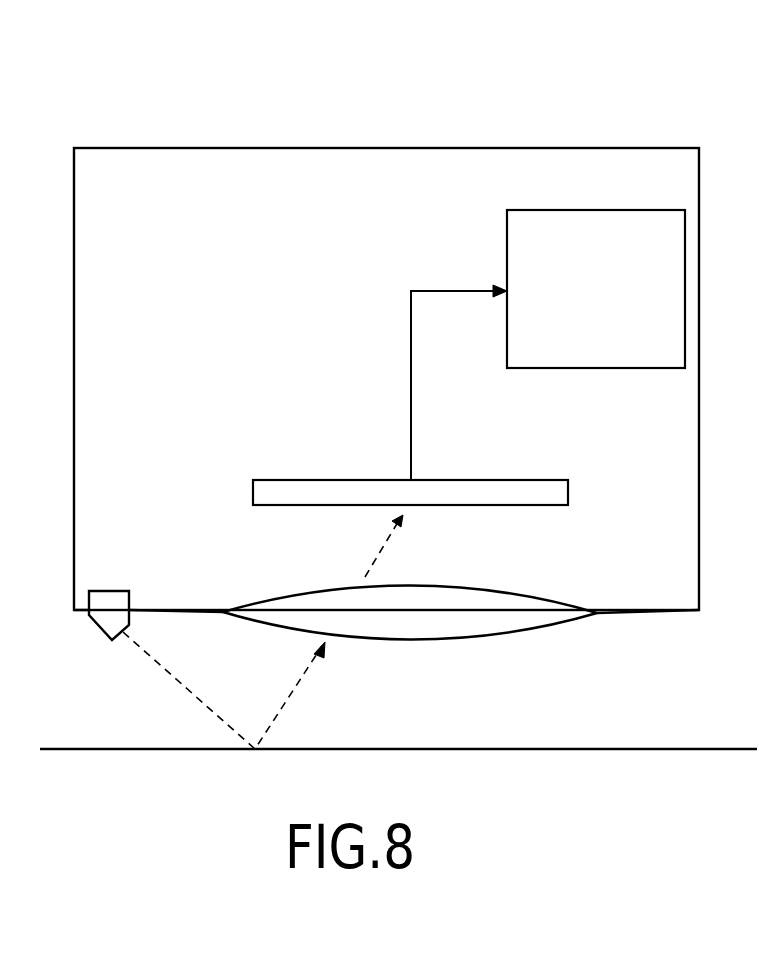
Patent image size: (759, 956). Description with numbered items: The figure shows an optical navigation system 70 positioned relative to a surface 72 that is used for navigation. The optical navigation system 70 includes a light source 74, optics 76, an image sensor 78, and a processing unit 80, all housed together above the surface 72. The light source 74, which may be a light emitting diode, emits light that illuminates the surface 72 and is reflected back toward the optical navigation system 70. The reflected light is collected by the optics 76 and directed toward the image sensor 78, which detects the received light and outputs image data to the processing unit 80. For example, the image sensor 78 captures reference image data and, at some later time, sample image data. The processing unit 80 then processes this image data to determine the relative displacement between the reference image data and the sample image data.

The optical navigation system 70 is at (589, 72).
The surface 72 is at (602, 749).
The light source 74 is at (107, 591).
The optics 76 is at (533, 595).
The image sensor 78 is at (568, 491).
The processing unit 80 is at (579, 348).